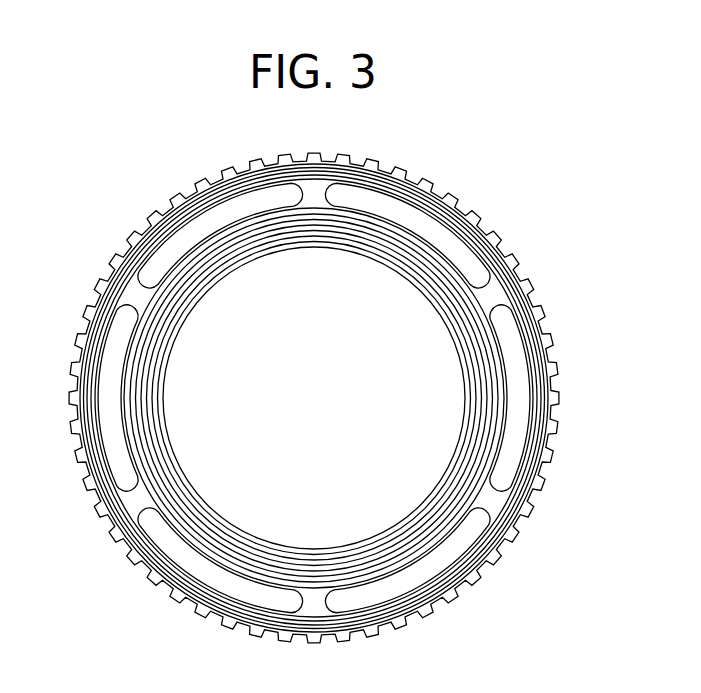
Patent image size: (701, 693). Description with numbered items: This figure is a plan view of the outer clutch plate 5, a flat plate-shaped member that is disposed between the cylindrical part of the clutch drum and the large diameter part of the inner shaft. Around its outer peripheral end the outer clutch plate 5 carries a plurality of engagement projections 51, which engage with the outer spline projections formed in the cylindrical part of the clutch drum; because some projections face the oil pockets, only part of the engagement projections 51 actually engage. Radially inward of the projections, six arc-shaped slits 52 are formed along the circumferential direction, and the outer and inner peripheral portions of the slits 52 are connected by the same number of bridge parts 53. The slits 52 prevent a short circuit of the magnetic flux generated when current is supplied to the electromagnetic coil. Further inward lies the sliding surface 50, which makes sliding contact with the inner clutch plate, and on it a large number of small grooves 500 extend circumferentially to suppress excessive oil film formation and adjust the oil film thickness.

The outer clutch plate 5 is at (172, 162).
The sliding surface 50 is at (430, 268).
The engagement projections 51 is at (167, 208).
The slits 52 is at (357, 198).
The bridge parts 53 is at (320, 190).
The small grooves 500 is at (170, 273).